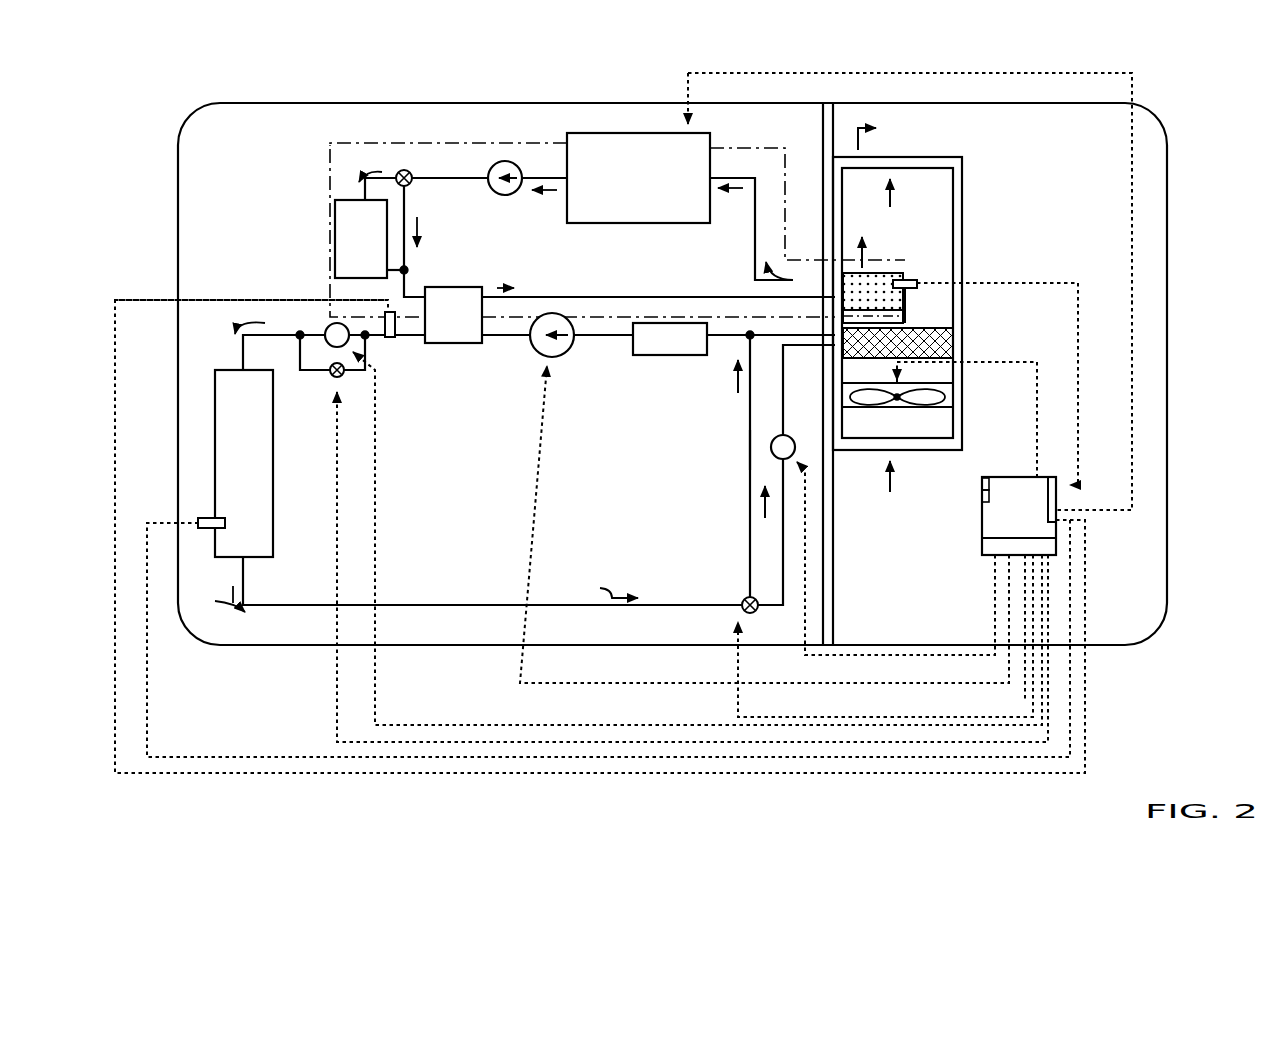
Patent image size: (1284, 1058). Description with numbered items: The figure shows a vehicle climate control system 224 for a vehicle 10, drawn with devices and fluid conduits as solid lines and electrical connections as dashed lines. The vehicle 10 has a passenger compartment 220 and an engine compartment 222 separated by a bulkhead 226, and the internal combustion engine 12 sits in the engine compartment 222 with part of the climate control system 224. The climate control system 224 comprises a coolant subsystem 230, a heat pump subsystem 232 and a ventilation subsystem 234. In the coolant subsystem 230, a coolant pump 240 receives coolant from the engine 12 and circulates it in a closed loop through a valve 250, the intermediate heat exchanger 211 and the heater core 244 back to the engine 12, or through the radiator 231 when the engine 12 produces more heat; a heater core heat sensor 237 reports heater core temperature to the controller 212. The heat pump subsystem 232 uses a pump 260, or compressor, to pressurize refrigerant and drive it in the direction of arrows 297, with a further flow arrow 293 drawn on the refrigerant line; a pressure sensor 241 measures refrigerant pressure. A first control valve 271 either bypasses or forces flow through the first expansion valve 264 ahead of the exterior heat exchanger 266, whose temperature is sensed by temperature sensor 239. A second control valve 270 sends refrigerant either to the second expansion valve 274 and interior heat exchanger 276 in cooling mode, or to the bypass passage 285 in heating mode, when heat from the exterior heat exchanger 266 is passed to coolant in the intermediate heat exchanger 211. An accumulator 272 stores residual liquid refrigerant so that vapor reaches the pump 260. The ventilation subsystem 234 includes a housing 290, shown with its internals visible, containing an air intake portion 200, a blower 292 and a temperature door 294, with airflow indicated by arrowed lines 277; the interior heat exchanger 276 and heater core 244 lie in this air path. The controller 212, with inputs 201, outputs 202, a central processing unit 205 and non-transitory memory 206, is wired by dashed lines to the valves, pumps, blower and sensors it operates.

The vehicle 10 is at (187, 122).
The internal combustion engine 12 is at (638, 178).
The air intake portion 200 is at (897, 425).
The inputs 201 is at (1052, 482).
The outputs 202 is at (990, 548).
The central processing unit 205 is at (982, 497).
The non-transitory memory 206 is at (982, 484).
The intermediate heat exchanger 211 is at (453, 315).
The controller 212 is at (1019, 516).
The passenger compartment 220 is at (1103, 248).
The engine compartment 222 is at (277, 162).
The climate control system 224 is at (355, 122).
The bulkhead 226 is at (835, 466).
The coolant subsystem 230 is at (330, 165).
The radiator 231 is at (361, 239).
The heat pump subsystem 232 is at (299, 278).
The ventilation subsystem 234 is at (966, 170).
The heater core heat sensor 237 is at (917, 282).
The temperature sensor 239 is at (198, 521).
The coolant pump 240 is at (510, 195).
The pressure sensor 241 is at (390, 338).
The heater core 244 is at (895, 272).
The valve 250 is at (409, 184).
The pump 260 is at (541, 351).
The first expansion valve 264 is at (330, 347).
The exterior heat exchanger 266 is at (244, 463).
The second control valve 270 is at (744, 598).
The first control valve 271 is at (345, 375).
The accumulator 272 is at (670, 339).
The second expansion valve 274 is at (793, 440).
The interior heat exchanger 276 is at (947, 347).
The arrowed lines 277 is at (925, 482).
The bypass passage 285 is at (750, 460).
The housing 290 is at (962, 437).
The blower 292 is at (930, 397).
The coolant flow direction 293 is at (738, 378).
The temperature door 294 is at (909, 309).
The arrows 297 is at (765, 505).